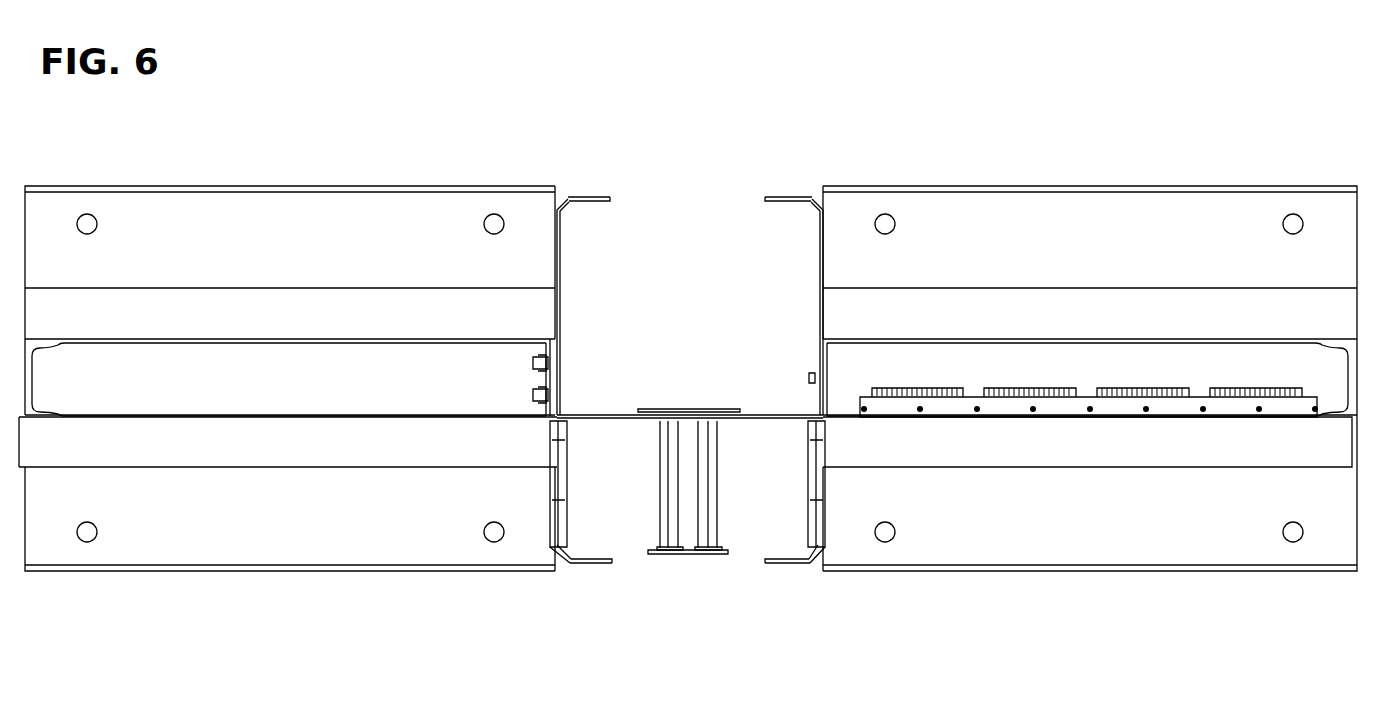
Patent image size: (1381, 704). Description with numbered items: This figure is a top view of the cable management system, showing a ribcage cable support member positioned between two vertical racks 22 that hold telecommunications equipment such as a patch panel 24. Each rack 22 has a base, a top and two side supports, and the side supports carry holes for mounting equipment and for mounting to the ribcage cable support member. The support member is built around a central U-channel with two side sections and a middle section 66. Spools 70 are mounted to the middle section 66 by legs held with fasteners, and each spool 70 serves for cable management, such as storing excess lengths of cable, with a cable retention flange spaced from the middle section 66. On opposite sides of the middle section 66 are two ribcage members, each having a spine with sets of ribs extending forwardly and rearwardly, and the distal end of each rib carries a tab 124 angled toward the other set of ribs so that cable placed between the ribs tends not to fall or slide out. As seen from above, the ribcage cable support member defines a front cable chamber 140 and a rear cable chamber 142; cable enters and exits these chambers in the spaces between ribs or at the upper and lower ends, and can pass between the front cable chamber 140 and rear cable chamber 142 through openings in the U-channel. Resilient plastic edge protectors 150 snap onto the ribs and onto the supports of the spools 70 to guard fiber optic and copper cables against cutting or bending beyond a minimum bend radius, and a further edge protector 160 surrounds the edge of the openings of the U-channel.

The vertical rack 22 is at (307, 187).
The patch panel 24 is at (1157, 393).
The middle section 66 is at (786, 412).
The spool 70 is at (688, 552).
The tab 124 is at (787, 197).
The front cable chamber 140 is at (612, 517).
The rear cable chamber 142 is at (690, 238).
The edge protector 150 is at (665, 477).
The edge protector 160 is at (730, 409).